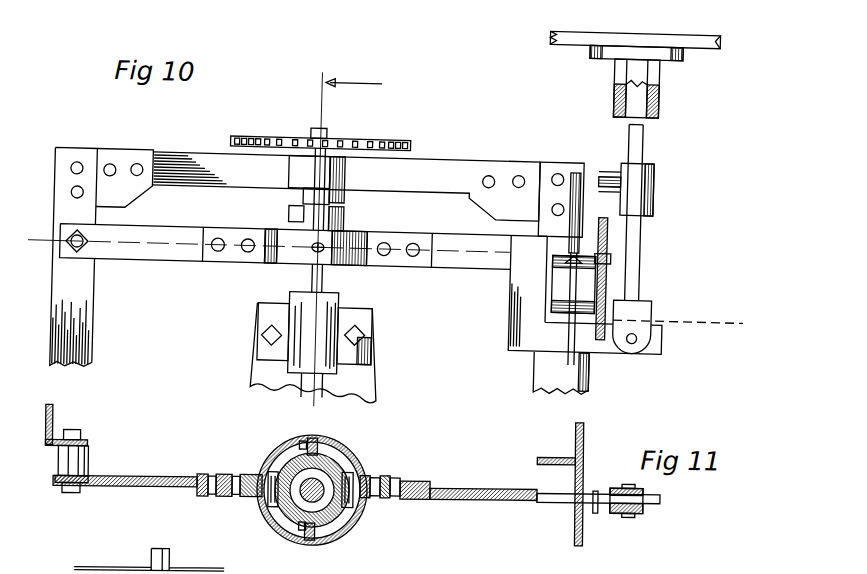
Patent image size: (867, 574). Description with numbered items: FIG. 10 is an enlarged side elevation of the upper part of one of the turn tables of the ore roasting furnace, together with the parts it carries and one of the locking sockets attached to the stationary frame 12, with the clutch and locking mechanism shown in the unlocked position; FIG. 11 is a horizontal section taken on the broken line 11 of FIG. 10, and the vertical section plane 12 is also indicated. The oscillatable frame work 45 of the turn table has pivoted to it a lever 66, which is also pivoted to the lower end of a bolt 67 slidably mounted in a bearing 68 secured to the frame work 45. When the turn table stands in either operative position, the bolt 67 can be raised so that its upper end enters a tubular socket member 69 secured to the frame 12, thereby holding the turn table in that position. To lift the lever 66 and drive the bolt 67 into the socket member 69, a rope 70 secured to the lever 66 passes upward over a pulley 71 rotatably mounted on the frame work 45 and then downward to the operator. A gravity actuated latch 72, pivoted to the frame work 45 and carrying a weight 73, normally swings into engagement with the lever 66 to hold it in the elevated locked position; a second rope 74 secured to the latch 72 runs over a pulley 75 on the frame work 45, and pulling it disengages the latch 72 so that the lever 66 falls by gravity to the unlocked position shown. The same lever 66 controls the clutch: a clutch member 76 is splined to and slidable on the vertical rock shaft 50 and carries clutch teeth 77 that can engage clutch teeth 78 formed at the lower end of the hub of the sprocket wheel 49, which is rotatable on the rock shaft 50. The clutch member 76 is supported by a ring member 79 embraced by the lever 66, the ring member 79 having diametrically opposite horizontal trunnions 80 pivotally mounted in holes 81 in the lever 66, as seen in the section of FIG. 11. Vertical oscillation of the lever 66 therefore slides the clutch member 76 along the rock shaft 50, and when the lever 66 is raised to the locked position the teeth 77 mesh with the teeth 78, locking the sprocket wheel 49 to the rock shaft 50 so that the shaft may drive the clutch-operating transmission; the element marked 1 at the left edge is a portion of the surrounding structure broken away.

In FIG. 10, the frame 1 is at (32, 233).
In FIG. 10, the broken line 11— 11 is at (690, 326).
In FIG. 10, the frame 12 is at (543, 26).
In FIG. 10, the oscillatable frame work 45 is at (453, 158).
In FIG. 11, the oscillatable frame work 45 is at (52, 428).
In FIG. 10, the sprocket wheel 49 is at (379, 131).
In FIG. 10, the vertical rock shaft 50 is at (312, 268).
In FIG. 11, the vertical rock shaft 50 is at (345, 474).
In FIG. 10, the lever 66 is at (172, 232).
In FIG. 11, the lever 66 is at (148, 479).
In FIG. 10, the bolt 67 is at (641, 232).
In FIG. 11, the bolt 67 is at (643, 509).
In FIG. 10, the bearing 68 is at (641, 160).
In FIG. 10, the tubular socket member 69 is at (631, 70).
In FIG. 10, the rope 70 is at (578, 312).
In FIG. 11, the rope 70 is at (597, 510).
In FIG. 10, the pulley 71 is at (608, 276).
In FIG. 10, the gravity actuated latch 72 is at (576, 346).
In FIG. 10, the weight 73 is at (566, 268).
In FIG. 10, the rope 74 is at (575, 204).
In FIG. 10, the pulley 75 is at (575, 172).
In FIG. 10, the clutch member 76 is at (346, 220).
In FIG. 11, the clutch member 76 is at (345, 518).
In FIG. 10, the clutch teeth 77 is at (290, 204).
In FIG. 10, the clutch teeth 78 is at (294, 180).
In FIG. 11, the ring member 79 is at (288, 455).
In FIG. 10, the trunnions 80 is at (323, 246).
In FIG. 11, the trunnions 80 is at (318, 442).
In FIG. 11, the holes 81 is at (302, 445).